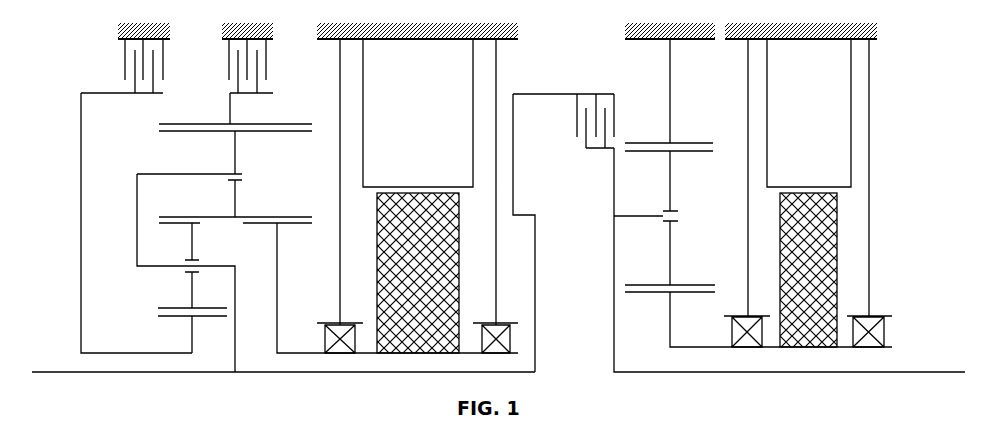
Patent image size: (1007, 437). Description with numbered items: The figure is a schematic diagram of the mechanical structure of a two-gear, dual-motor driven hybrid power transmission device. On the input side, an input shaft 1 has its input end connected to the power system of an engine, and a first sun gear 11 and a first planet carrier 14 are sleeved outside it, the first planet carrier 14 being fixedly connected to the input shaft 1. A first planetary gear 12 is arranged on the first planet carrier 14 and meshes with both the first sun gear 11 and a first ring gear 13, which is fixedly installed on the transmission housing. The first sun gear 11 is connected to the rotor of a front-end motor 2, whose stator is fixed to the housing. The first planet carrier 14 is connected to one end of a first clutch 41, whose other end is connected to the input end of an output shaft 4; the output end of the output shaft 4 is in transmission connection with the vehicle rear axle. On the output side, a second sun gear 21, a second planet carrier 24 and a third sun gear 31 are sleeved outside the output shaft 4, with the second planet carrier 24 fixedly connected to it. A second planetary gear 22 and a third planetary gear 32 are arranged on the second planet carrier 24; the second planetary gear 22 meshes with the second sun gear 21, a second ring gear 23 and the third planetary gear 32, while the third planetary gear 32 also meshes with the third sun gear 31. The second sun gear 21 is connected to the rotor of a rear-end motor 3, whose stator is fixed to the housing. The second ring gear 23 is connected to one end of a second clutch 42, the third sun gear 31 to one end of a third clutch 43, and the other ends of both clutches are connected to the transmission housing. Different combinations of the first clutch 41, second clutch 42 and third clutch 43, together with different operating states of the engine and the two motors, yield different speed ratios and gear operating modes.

The input shaft 1 is at (789, 260).
The front-end motor 2 is at (808, 193).
The rear-end motor 3 is at (417, 196).
The output shaft 4 is at (323, 232).
The first sun gear 11 is at (758, 319).
The first planetary gear 12 is at (670, 253).
The first ring gear 13 is at (669, 125).
The first planet carrier 14 is at (646, 198).
The second sun gear 21 is at (397, 288).
The second planetary gear 22 is at (235, 201).
The second ring gear 23 is at (235, 133).
The second planet carrier 24 is at (165, 273).
The third sun gear 31 is at (189, 334).
The third planetary gear 32 is at (189, 265).
The first clutch 41 is at (575, 121).
The second clutch 42 is at (268, 66).
The third clutch 43 is at (123, 66).